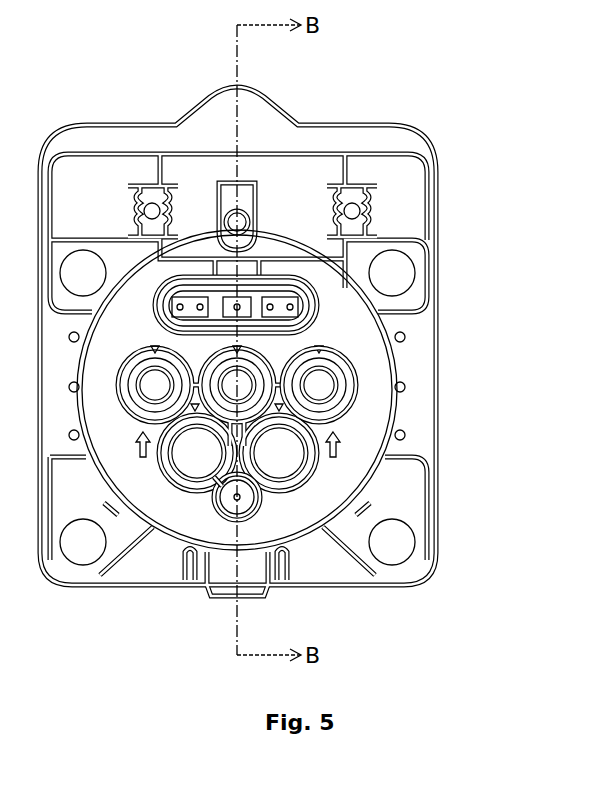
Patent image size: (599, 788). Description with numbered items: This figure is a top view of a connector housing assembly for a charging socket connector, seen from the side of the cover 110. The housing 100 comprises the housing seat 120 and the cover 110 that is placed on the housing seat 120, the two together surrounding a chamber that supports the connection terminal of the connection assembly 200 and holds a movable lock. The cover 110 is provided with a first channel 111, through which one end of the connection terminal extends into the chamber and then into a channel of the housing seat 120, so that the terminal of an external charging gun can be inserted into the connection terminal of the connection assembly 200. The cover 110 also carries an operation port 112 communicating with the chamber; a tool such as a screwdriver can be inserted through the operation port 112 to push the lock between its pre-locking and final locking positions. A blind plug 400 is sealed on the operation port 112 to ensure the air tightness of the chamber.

The housing 100 is at (307, 368).
The cover 110 is at (294, 390).
The first channel 111 is at (401, 339).
The operation port 112 is at (157, 563).
The housing seat 120 is at (280, 341).
The connection assembly 200 is at (411, 400).
The blind plug 400 is at (367, 497).